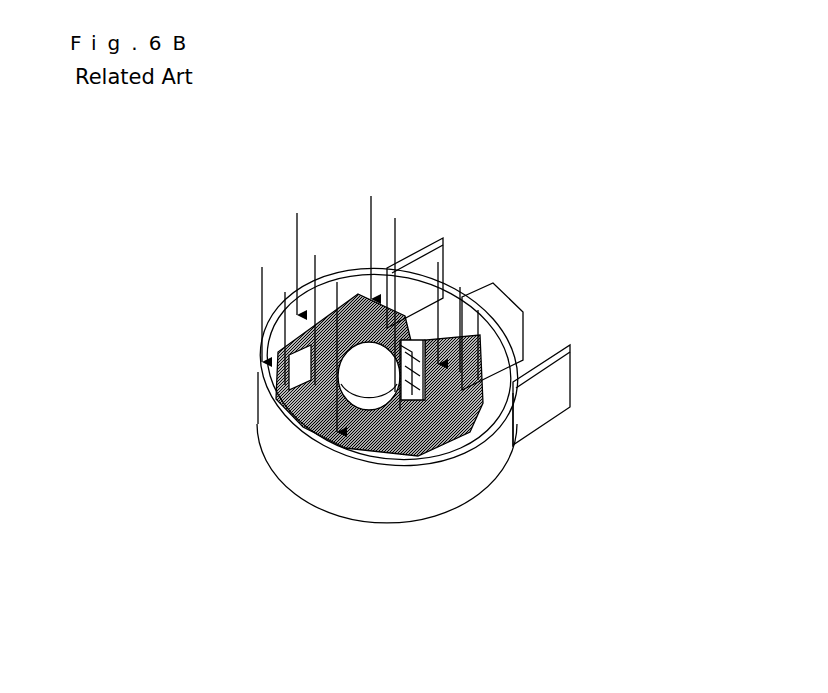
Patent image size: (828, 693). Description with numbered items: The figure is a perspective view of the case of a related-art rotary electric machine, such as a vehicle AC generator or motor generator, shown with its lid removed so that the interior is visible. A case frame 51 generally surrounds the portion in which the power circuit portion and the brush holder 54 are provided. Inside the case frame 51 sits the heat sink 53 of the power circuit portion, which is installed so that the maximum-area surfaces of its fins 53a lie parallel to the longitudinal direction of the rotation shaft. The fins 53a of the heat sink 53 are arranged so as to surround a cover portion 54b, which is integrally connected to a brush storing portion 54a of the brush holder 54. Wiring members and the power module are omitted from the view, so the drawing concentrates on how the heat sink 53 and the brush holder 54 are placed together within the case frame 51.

The case frame 51 is at (473, 475).
The heat sink 53 is at (272, 376).
The fins 53a is at (347, 295).
The brush holder 54 is at (527, 323).
The brush storing portion 54a is at (478, 310).
The cover portion 54b is at (385, 395).